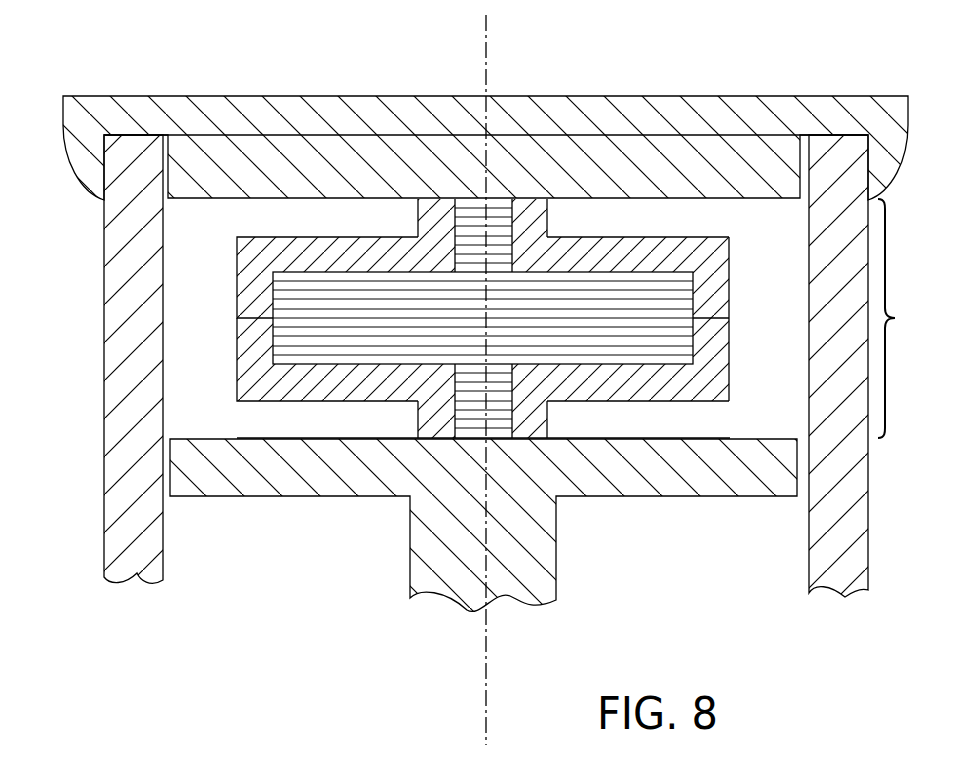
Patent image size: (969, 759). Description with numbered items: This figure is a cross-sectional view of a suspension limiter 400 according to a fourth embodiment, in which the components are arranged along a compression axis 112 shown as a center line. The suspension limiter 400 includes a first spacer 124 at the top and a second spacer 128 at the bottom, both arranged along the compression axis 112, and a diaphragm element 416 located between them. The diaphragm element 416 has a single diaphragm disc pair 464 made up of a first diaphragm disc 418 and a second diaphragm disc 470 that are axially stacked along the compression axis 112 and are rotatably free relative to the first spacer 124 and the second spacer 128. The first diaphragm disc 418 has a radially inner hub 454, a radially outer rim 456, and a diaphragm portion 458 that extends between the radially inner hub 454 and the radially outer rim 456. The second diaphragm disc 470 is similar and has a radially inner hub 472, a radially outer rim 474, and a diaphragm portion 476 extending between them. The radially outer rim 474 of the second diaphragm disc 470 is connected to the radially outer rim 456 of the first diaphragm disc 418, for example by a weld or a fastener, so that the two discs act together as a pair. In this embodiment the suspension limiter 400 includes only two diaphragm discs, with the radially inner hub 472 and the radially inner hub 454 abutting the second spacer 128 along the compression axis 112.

The first spacer 124 is at (233, 160).
The second spacer 128 is at (638, 475).
The suspension limiter 400 is at (489, 406).
The first diaphragm disc 418 is at (220, 375).
The diaphragm element 416 is at (876, 366).
The second diaphragm disc 470 is at (359, 417).
The radially inner hub 454 is at (321, 417).
The radially outer rim 456 is at (267, 387).
The diaphragm portion 458 is at (293, 393).
The radially inner hub 472 is at (663, 231).
The diaphragm portion 476 is at (648, 248).
The radially outer rim 474 is at (723, 262).
The single diaphragm disc pair 464 is at (348, 410).
The compression axis 112 is at (486, 665).